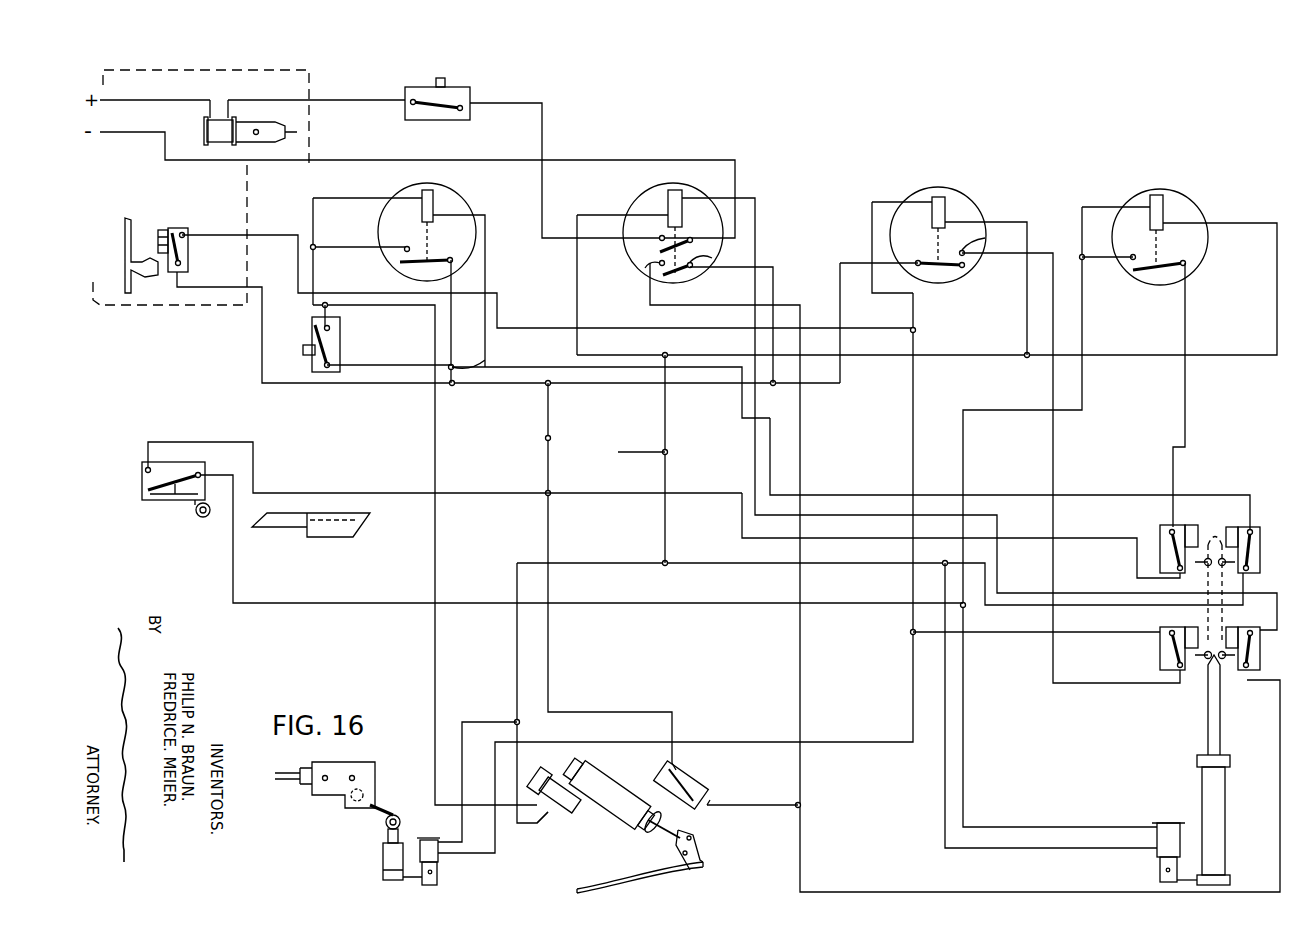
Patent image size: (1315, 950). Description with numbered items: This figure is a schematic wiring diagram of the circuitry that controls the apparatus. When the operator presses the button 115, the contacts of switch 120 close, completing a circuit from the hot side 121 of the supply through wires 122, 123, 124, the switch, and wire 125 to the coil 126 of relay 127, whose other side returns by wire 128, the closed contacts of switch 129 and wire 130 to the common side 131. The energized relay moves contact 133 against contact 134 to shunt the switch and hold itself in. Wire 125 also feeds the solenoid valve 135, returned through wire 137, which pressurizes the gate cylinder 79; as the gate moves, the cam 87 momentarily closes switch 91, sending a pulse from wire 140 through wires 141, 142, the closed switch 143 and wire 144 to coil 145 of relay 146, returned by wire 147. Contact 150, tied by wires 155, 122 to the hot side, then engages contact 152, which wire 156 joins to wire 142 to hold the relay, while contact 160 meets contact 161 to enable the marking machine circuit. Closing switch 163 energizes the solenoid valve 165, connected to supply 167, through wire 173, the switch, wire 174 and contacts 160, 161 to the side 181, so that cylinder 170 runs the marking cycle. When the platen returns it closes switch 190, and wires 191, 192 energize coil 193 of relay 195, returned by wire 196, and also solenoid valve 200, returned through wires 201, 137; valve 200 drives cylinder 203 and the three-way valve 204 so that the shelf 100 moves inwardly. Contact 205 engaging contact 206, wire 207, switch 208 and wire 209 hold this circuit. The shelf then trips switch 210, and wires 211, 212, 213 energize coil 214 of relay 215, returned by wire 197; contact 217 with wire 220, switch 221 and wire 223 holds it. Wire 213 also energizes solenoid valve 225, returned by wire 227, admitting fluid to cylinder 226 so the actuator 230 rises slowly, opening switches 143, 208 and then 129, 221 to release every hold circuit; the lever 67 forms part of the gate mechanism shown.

The actuating arm 67 is at (625, 888).
The gate cylinder 79 is at (612, 782).
The cam 87 is at (645, 830).
The switch 91 is at (698, 786).
The shelf 100 is at (345, 530).
The button 115 is at (303, 350).
The switch 120 is at (342, 342).
The hot side of the supply 121 is at (545, 440).
The wire 122 is at (258, 318).
The wire 123 is at (485, 364).
The wire 124 is at (410, 363).
The wire 125 is at (314, 276).
The coil 126 is at (420, 195).
The relay 127 is at (455, 187).
The wire 128 is at (483, 250).
The switch 129 is at (1256, 556).
The wire 130 is at (715, 565).
The common side of the supply 131 is at (645, 452).
The contact 133 is at (405, 270).
The contact 134 is at (405, 247).
The solenoid valve 135 is at (558, 818).
The wire 137 is at (665, 534).
The wire 140 is at (550, 682).
The wire 141 is at (758, 803).
The wire 142 is at (1282, 700).
The switch 143 is at (1262, 648).
The wire 144 is at (758, 226).
The coil 145 is at (672, 195).
The relay 146 is at (700, 172).
The wire 147 is at (577, 302).
The contact 150 is at (719, 254).
The contact 152 is at (646, 276).
The wire 155 is at (775, 274).
The wire 156 is at (800, 310).
The contact 160 is at (691, 231).
The contact 161 is at (660, 236).
The switch 163 is at (455, 90).
The solenoid valve 165 is at (205, 128).
The supply 167 is at (150, 98).
The cylinder 170 is at (250, 128).
The wire 173 is at (360, 103).
The wire 174 is at (512, 105).
The side 181 is at (150, 142).
The switch 190 is at (180, 228).
The wire 191 is at (258, 235).
The wire 192 is at (912, 293).
The coil 193 is at (932, 200).
The relay 195 is at (945, 180).
The wire 196 is at (1028, 300).
The wire 197 is at (962, 358).
The solenoid valve 200 is at (440, 862).
The wire 201 is at (460, 790).
The cylinder 203 is at (383, 870).
The three-way valve 204 is at (368, 778).
The contact 205 is at (950, 275).
The contact 206 is at (986, 288).
The wire 207 is at (1112, 683).
The switch 208 is at (1165, 652).
The wire 209 is at (265, 528).
The switch 210 is at (142, 492).
The wire 211 is at (377, 492).
The wire 212 is at (348, 602).
The wire 213 is at (1047, 410).
The coil 214 is at (1160, 200).
The relay 215 is at (1142, 185).
The contact 217 is at (1185, 262).
The wire 220 is at (1185, 415).
The switch 221 is at (1168, 535).
The wire 223 is at (572, 497).
The solenoid valve 225 is at (1168, 830).
The cylinder 226 is at (1218, 848).
The wire 227 is at (1035, 850).
The actuator 230 is at (1222, 740).